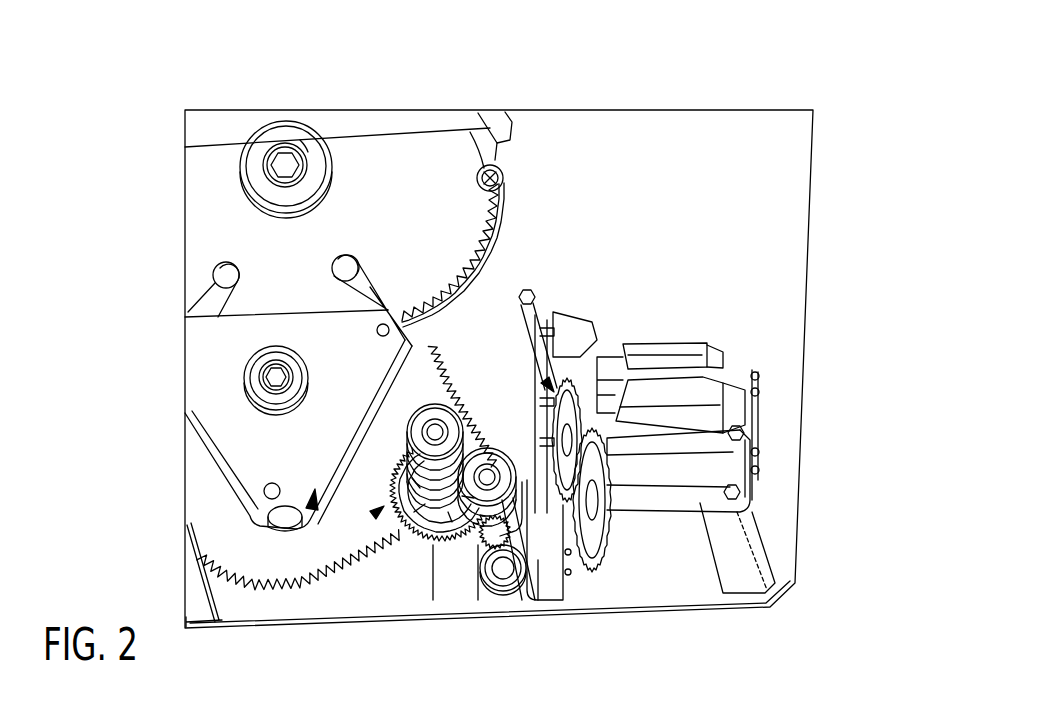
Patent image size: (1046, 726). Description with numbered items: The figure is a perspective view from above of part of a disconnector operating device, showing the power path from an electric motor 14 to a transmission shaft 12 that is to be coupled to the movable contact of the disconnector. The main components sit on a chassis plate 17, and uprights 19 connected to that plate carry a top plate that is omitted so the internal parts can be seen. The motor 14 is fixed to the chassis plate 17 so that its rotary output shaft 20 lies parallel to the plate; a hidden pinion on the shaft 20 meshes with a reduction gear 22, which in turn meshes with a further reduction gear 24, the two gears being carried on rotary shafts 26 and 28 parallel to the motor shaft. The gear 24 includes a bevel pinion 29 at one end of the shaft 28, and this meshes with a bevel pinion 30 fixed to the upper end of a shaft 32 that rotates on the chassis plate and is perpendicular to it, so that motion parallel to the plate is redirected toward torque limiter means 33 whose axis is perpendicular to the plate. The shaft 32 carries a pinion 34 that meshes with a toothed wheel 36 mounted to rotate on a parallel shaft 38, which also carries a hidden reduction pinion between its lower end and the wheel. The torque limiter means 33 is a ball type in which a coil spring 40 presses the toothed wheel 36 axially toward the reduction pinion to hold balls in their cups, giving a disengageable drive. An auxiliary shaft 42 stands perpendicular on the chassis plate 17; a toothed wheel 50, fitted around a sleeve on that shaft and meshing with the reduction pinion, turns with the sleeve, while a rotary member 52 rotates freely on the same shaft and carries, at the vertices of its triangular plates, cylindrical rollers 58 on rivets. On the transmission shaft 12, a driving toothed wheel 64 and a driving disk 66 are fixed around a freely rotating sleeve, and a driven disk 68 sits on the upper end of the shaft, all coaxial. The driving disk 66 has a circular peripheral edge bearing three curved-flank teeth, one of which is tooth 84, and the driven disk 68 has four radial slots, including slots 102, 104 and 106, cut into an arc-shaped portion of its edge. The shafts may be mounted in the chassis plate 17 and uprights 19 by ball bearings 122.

The transmission shaft 12 is at (281, 152).
The electric motor 14 is at (685, 345).
The chassis plate 17 is at (660, 612).
The uprights 19 is at (555, 563).
The rotary output shaft 20 is at (572, 375).
The reduction gear 22 is at (545, 380).
The reduction gear 24 is at (660, 466).
The rotary shaft 26 is at (717, 437).
The rotary shaft 28 is at (676, 507).
The bevel pinion 29 is at (532, 580).
The bevel pinion 30 is at (508, 590).
The shaft 32 is at (475, 437).
The torque limiter means 33 is at (373, 515).
The pinion 34 is at (500, 508).
The toothed wheel 36 is at (403, 467).
The shaft 38 is at (432, 430).
The coil spring 40 is at (437, 545).
The auxiliary shaft 42 is at (262, 371).
The toothed wheel 50 is at (267, 563).
The rotary member 52 is at (312, 512).
The cylindrical roller 58 is at (255, 522).
The driving toothed wheel 64 is at (488, 268).
The driving disk 66 is at (214, 300).
The driven disk 68 is at (208, 157).
The tooth 84 is at (497, 135).
The radial slot 102 is at (477, 167).
The radial slot 104 is at (360, 258).
The radial slot 106 is at (215, 282).
The ball bearing 122 is at (305, 148).